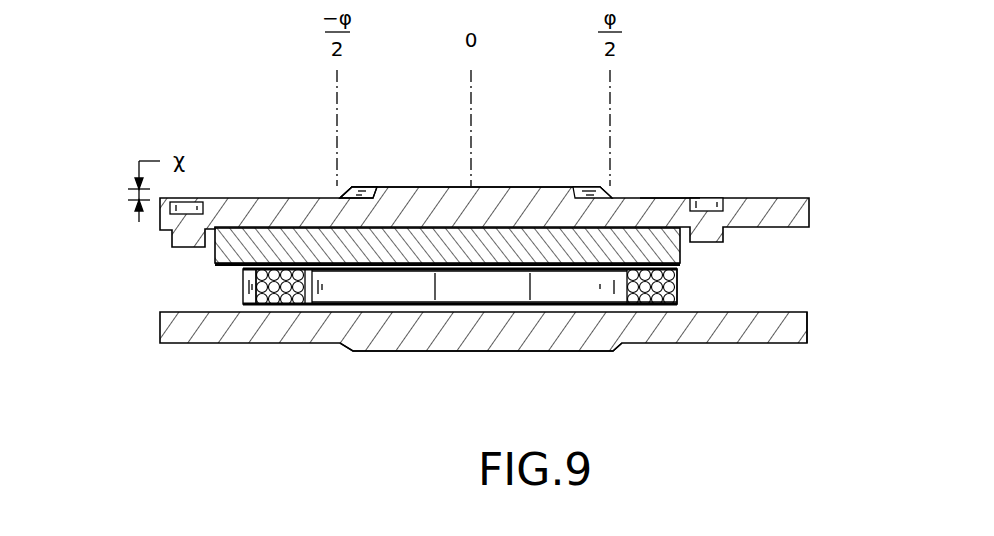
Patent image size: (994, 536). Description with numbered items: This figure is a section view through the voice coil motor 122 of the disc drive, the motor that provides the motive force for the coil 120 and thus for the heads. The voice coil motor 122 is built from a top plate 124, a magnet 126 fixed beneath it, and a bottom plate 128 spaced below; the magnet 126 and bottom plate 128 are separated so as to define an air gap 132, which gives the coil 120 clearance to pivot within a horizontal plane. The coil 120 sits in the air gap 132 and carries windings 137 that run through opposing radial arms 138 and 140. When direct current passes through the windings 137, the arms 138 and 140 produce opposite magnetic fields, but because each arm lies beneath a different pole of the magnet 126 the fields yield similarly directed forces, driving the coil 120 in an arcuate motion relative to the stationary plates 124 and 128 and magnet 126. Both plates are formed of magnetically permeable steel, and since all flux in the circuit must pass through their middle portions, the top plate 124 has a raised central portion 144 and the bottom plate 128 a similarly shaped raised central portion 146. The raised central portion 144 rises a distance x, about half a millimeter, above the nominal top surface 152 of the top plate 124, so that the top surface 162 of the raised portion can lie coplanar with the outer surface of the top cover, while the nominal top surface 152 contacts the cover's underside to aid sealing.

The coil 120 is at (335, 290).
The voice coil motor 122 is at (732, 358).
The top plate 124 is at (809, 212).
The magnet 126 is at (680, 253).
The bottom plate 128 is at (807, 330).
The air gap 132 is at (427, 332).
The windings 137 is at (677, 275).
The radial arm 138 is at (263, 305).
The radial arm 140 is at (652, 305).
The raised central portion 144 is at (366, 178).
The raised central portion 146 is at (362, 362).
The nominal top surface 152 is at (672, 197).
The top surface 162 is at (520, 186).